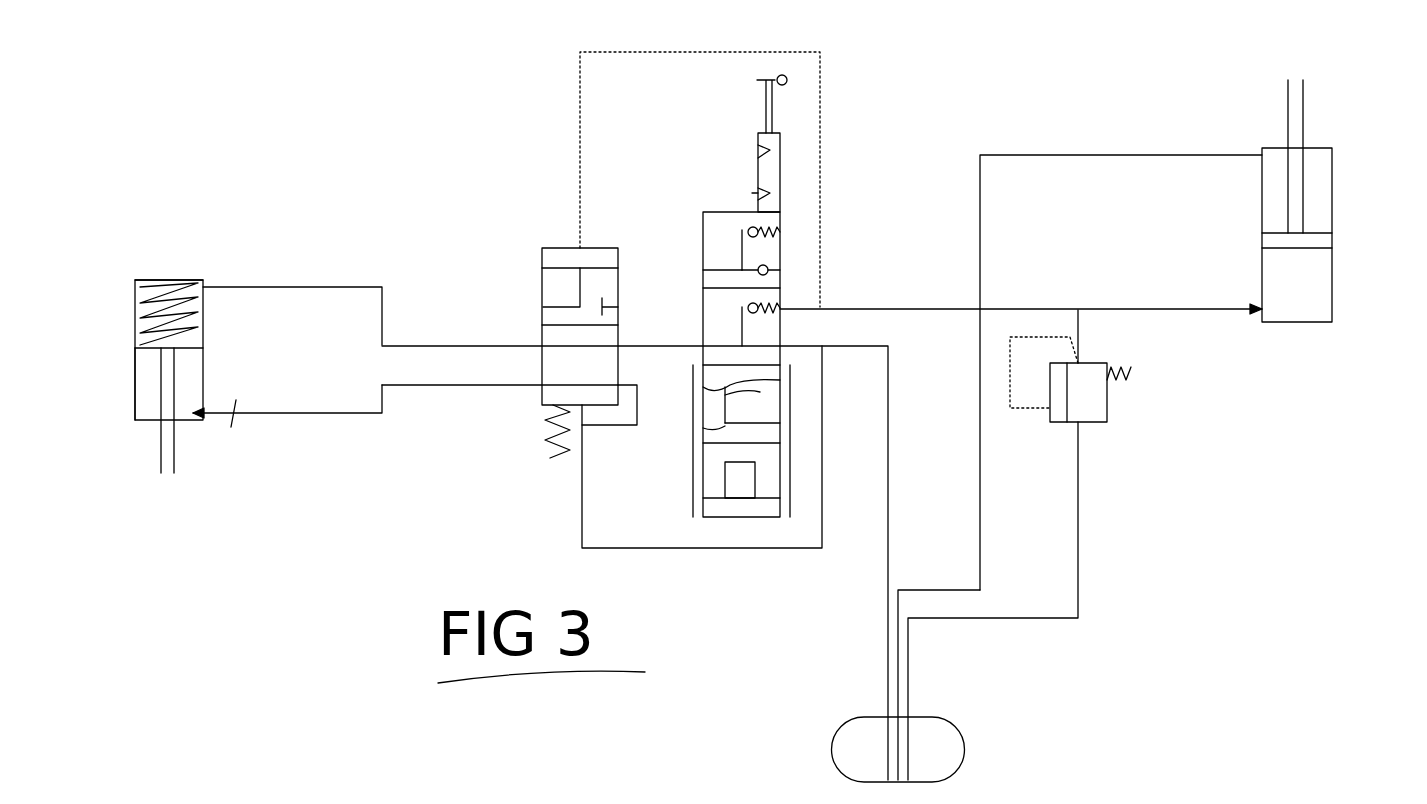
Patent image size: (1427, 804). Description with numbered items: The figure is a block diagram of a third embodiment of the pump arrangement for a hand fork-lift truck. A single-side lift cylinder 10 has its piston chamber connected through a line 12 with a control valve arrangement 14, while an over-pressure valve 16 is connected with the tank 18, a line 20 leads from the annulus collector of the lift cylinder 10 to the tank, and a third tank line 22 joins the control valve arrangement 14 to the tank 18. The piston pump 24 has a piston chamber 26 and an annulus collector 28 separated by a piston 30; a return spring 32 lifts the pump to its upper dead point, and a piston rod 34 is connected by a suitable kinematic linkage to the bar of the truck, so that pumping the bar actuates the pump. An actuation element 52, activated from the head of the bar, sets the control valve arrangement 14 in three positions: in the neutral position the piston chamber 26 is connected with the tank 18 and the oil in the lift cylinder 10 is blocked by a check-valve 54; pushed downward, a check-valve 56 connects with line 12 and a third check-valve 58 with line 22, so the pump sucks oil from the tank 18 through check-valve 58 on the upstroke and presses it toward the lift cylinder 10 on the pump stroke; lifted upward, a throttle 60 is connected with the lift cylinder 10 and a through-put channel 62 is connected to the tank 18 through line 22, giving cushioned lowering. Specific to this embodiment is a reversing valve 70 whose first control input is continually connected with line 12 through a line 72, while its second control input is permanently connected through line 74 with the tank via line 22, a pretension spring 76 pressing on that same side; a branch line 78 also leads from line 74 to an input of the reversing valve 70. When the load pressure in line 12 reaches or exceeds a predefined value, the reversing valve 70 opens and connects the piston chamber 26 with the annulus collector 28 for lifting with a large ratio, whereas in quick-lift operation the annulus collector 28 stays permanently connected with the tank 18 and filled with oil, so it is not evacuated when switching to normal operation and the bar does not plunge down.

The lift cylinder 10 is at (1335, 285).
The line 12 is at (1140, 308).
The control valve arrangement 14 is at (708, 190).
The over-pressure valve 16 is at (1098, 405).
The tank 18 is at (955, 735).
The line 20 is at (985, 225).
The third tank line 22 is at (890, 437).
The piston pump 24 is at (172, 272).
The piston chamber 26 is at (195, 324).
The annulus collector 28 is at (138, 388).
The piston 30 is at (140, 337).
The return spring 32 is at (183, 287).
The piston rod 34 is at (170, 452).
The actuation element 52 is at (775, 140).
The check-valve 54 is at (758, 307).
The check-valve 56 is at (758, 232).
The third check-valve 58 is at (765, 268).
The throttle 60 is at (702, 387).
The through-put channel 62 is at (733, 427).
The reversing valve 70 is at (530, 283).
The line 72 is at (617, 52).
The line 74 is at (710, 550).
The pretension spring 76 is at (552, 447).
The branch line 78 is at (608, 427).